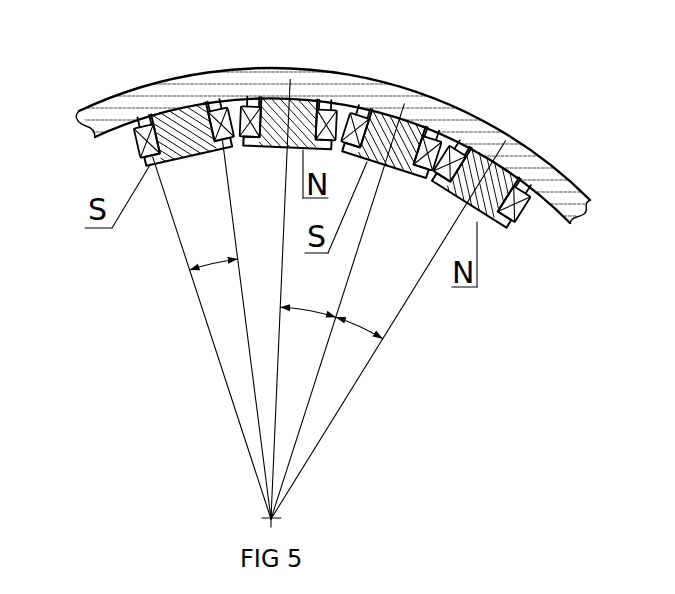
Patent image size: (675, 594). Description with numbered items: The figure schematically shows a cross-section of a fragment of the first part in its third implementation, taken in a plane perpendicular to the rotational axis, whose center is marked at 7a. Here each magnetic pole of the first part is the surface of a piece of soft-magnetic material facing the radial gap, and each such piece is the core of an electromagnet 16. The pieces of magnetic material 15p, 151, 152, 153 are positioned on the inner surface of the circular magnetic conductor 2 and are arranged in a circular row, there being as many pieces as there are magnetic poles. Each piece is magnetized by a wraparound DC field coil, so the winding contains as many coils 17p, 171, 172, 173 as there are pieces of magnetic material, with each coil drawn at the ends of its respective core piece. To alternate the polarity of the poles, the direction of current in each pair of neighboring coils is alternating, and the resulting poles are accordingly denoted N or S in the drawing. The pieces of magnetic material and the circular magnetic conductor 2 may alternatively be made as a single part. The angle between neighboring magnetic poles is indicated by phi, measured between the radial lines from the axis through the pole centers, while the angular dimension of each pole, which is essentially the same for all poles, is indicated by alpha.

The circular magnetic conductor 2 is at (147, 120).
The electromagnet 16 is at (123, 155).
The coil 17p is at (220, 110).
The coil 171 is at (326, 111).
The coil 172 is at (430, 138).
The coil 173 is at (521, 192).
The piece of magnetic material 15p is at (160, 162).
The piece of magnetic material 151 is at (133, 333).
The piece of magnetic material 152 is at (407, 292).
The piece of magnetic material 153 is at (490, 220).
The rotation axis center 7a is at (272, 518).